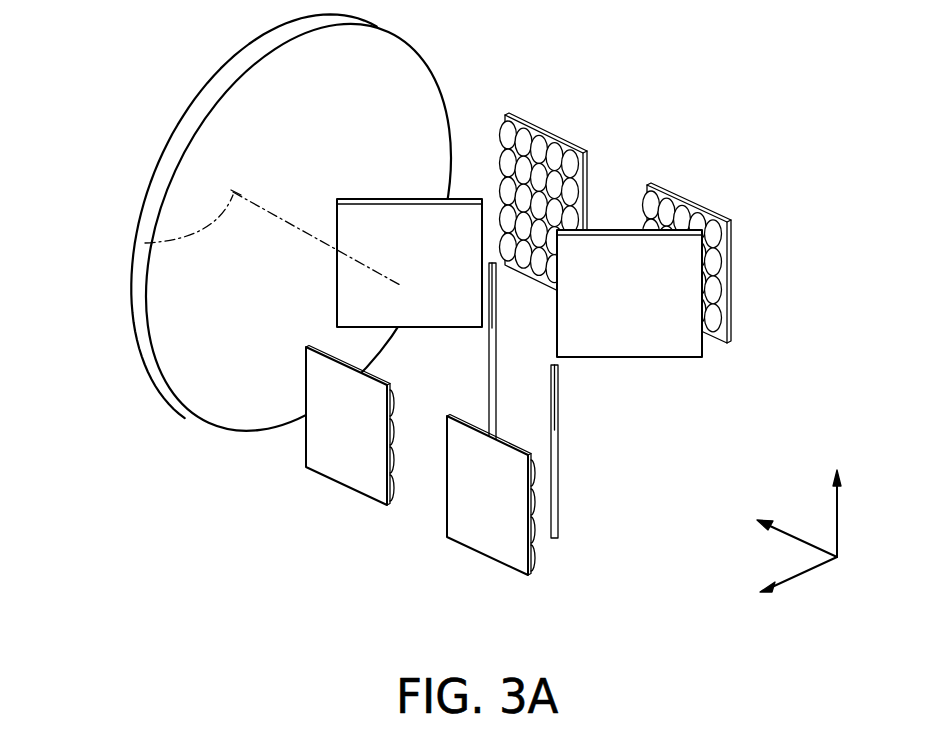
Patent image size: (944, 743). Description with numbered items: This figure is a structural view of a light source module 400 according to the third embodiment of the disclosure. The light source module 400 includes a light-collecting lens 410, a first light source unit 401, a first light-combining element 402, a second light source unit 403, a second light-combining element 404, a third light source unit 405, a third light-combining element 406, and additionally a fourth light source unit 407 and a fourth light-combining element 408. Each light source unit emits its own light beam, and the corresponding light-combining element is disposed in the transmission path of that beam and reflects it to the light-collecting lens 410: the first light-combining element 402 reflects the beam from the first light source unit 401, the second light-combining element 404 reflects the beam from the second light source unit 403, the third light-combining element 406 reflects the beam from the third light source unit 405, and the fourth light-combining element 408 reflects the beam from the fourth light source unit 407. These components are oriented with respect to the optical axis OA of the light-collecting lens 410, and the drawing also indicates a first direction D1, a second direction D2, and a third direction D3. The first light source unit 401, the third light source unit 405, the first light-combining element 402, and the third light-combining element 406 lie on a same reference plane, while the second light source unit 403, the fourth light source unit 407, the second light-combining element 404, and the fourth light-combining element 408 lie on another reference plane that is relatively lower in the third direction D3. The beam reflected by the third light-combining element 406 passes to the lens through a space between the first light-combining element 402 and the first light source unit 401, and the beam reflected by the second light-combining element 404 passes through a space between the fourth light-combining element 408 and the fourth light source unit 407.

The light source module 400 is at (726, 29).
The first light source unit 401 is at (548, 133).
The first light-combining element 402 is at (420, 313).
The second light source unit 403 is at (483, 535).
The second light-combining element 404 is at (555, 475).
The third light source unit 405 is at (693, 200).
The third light-combining element 406 is at (648, 340).
The fourth light source unit 407 is at (343, 467).
The fourth light-combining element 408 is at (493, 355).
The light-collecting lens 410 is at (262, 113).
The optical axis OA is at (145, 243).
The first direction D1 is at (779, 524).
The second direction D2 is at (779, 594).
The third direction D3 is at (843, 493).